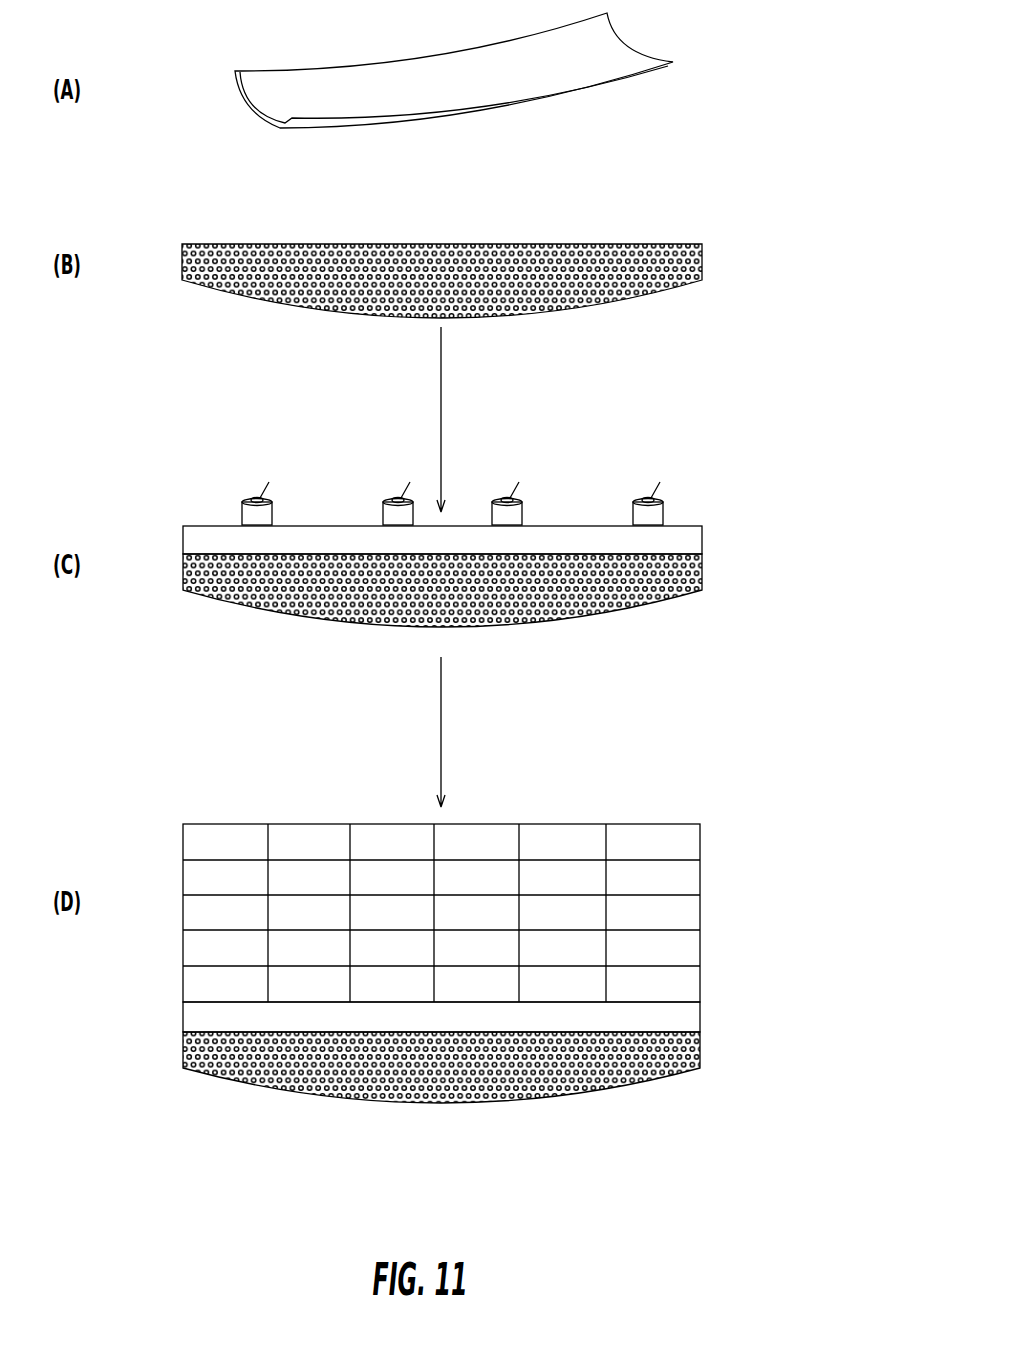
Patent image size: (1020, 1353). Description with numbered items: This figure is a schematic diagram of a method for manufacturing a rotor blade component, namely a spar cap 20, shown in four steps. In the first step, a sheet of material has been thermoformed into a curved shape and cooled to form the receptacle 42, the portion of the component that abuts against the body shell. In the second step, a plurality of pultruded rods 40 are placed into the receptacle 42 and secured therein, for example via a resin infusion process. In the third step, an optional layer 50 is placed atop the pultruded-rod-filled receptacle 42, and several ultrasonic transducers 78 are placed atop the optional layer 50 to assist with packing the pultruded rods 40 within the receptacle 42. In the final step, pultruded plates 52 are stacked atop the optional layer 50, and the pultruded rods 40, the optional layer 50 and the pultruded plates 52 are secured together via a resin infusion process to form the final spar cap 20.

The spar cap 20 is at (734, 901).
The pultruded rods 40 is at (437, 305).
The receptacle 42 is at (303, 72).
The optional layer 50 is at (190, 540).
The pultruded plates 52 is at (568, 848).
The ultrasonic transducer 78 is at (383, 501).